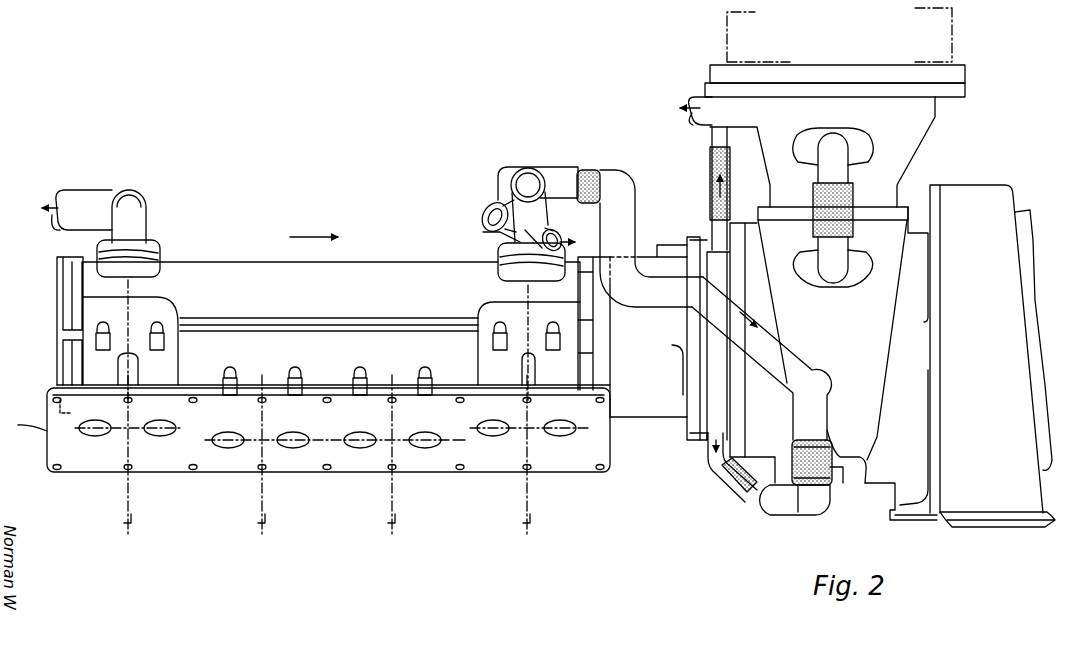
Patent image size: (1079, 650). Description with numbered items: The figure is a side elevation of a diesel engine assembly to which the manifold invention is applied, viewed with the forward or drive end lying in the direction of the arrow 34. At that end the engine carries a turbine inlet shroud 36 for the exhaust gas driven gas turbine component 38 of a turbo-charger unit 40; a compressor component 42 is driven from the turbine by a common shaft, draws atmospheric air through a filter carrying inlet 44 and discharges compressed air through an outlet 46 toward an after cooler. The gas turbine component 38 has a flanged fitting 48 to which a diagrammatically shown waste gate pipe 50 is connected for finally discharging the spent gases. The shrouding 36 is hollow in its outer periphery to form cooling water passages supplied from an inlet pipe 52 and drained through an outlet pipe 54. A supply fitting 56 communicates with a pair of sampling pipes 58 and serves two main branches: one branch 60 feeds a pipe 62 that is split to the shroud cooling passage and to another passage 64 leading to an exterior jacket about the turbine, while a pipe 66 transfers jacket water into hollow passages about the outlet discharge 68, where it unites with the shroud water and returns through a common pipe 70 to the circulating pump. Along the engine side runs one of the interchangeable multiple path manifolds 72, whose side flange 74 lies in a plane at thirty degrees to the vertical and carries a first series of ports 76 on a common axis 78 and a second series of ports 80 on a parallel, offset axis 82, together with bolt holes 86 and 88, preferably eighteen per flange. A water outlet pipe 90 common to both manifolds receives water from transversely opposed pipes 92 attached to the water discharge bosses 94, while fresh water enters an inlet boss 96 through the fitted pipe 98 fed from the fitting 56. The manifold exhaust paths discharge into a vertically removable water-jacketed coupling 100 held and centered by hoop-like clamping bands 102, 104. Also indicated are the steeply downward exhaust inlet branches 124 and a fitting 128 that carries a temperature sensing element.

The arrow 34 is at (314, 227).
The turbine inlet shroud 36 is at (705, 240).
The gas turbine component 38 is at (897, 220).
The turbo-charger unit 40 is at (878, 508).
The compressor component 42 is at (993, 190).
The filter carrying inlet 44 is at (1030, 248).
The outlet 46 is at (965, 527).
The flanged fitting 48 is at (968, 92).
The waste gate pipe 50 is at (955, 48).
The inlet pipe 52 is at (705, 474).
The outlet pipe 54 is at (710, 141).
The fitting 56 is at (548, 167).
The sampling pipes 58 is at (541, 232).
The branch 60 is at (600, 180).
The pipe 62 is at (777, 345).
The passage 64 is at (832, 484).
The pipe 66 is at (850, 172).
The outlet discharge 68 is at (938, 112).
The common pipe 70 is at (701, 93).
The multiple path manifold 72 is at (217, 268).
The side flange 74 is at (93, 470).
The ports 76 is at (175, 426).
The axis 78 is at (462, 428).
The ports 80 is at (237, 450).
The axis 82 is at (460, 443).
The bolt holes 86 is at (40, 470).
The bolt holes 88 is at (263, 387).
The water outlet pipe 90 is at (96, 192).
The pipes 92 is at (142, 222).
The water discharge boss 94 is at (163, 262).
The inlet boss 96 is at (500, 264).
The pipe 98 is at (500, 240).
The water-jacketed coupling 100 is at (642, 257).
The clamping band 102 is at (607, 343).
The clamping band 104 is at (681, 372).
The exhaust inlet branches 124 is at (173, 357).
The fitting 128 is at (180, 328).